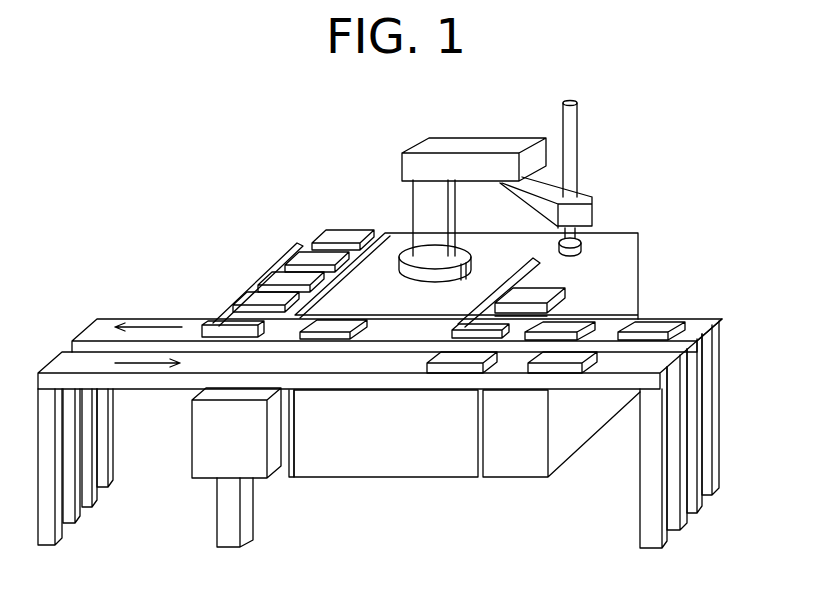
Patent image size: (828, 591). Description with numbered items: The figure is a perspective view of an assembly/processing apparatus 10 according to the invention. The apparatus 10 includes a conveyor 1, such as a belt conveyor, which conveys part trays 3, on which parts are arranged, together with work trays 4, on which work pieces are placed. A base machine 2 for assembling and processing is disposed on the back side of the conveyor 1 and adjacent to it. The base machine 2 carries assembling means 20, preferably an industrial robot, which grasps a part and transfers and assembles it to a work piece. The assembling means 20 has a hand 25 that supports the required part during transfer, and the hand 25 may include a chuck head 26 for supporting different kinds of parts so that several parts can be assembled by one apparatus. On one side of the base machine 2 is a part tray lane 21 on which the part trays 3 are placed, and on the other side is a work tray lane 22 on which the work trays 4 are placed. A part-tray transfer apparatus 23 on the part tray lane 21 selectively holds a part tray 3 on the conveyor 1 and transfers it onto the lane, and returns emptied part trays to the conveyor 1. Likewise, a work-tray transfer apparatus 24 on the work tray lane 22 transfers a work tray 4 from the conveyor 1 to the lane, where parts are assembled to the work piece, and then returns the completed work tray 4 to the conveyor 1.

The conveyor 1 is at (94, 290).
The assembly/processing apparatus 10 is at (189, 193).
The base machine 2 is at (378, 180).
The assembling means 20 is at (448, 121).
The hand 25 is at (596, 182).
The chuck head 26 is at (583, 248).
The part tray lane 21 is at (236, 312).
The work tray lane 22 is at (548, 262).
The part-tray transfer apparatus 23 is at (215, 320).
The work-tray transfer apparatus 24 is at (565, 288).
The part tray 3 is at (340, 240).
The work tray 4 is at (580, 315).